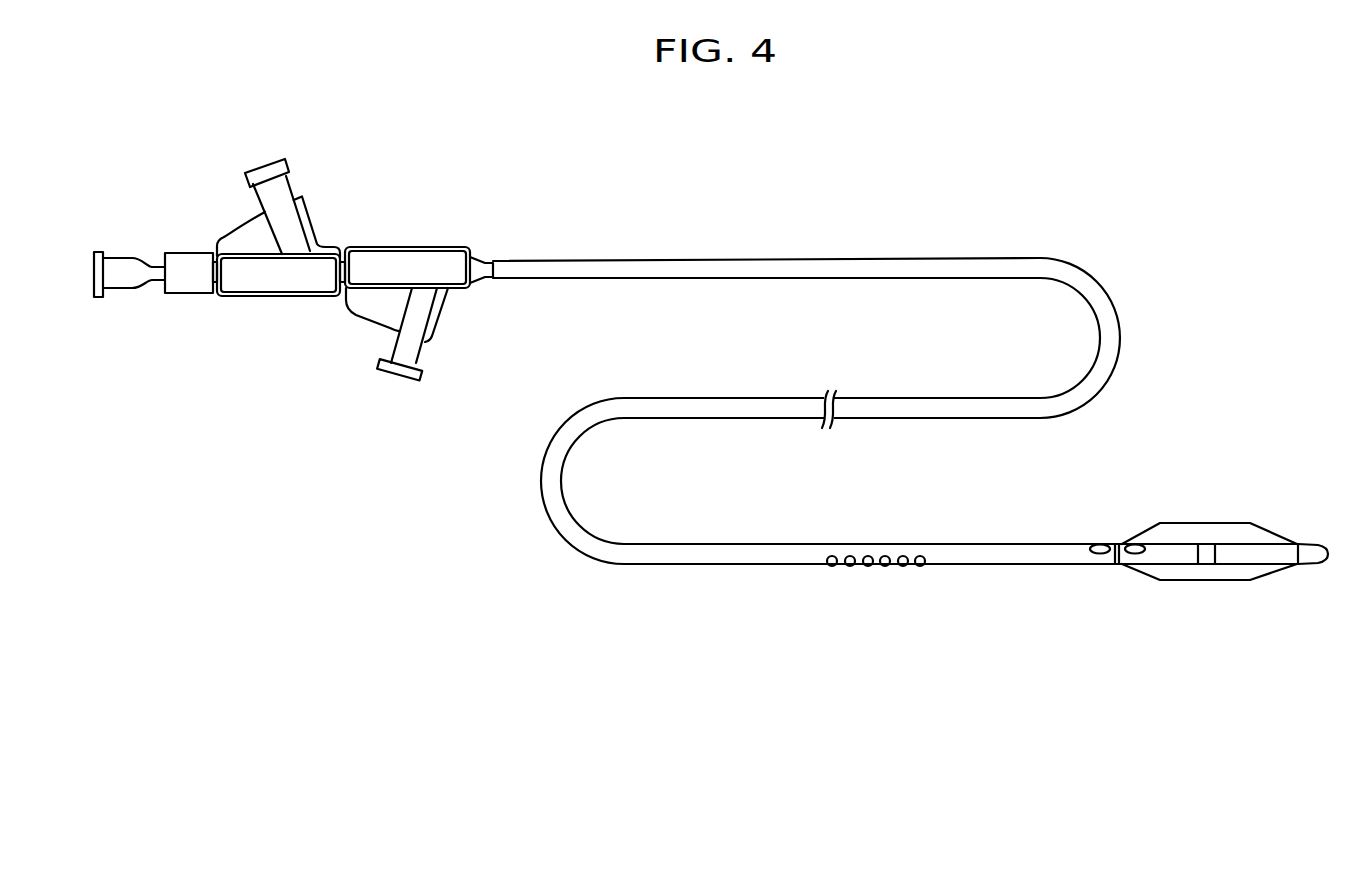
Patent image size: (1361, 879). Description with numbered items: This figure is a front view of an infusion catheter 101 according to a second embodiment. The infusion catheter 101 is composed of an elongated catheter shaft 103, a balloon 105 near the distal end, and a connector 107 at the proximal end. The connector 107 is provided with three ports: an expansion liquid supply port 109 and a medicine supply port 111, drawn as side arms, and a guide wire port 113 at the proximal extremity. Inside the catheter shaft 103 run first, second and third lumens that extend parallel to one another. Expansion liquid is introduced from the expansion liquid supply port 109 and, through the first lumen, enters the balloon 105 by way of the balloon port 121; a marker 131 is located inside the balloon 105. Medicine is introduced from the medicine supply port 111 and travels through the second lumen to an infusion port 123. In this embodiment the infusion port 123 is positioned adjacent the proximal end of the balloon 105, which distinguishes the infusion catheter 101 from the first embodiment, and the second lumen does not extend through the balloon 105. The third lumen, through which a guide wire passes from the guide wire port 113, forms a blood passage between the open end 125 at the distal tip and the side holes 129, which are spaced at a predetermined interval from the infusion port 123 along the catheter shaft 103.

The infusion catheter 101 is at (727, 216).
The catheter shaft 103 is at (1027, 262).
The balloon 105 is at (1242, 533).
The connector 107 is at (283, 273).
The expansion liquid supply port 109 is at (410, 353).
The medicine supply port 111 is at (277, 187).
The guide wire port 113 is at (123, 277).
The balloon port 121 is at (1133, 546).
The infusion port 123 is at (1102, 556).
The open end 125 is at (1328, 550).
The side holes 129 is at (834, 568).
The marker 131 is at (1206, 548).